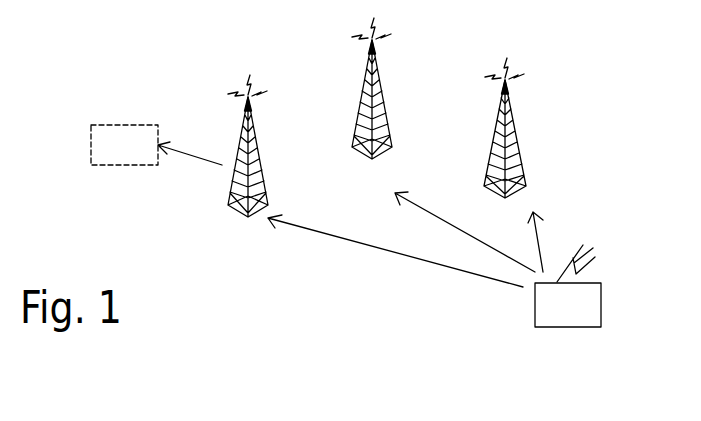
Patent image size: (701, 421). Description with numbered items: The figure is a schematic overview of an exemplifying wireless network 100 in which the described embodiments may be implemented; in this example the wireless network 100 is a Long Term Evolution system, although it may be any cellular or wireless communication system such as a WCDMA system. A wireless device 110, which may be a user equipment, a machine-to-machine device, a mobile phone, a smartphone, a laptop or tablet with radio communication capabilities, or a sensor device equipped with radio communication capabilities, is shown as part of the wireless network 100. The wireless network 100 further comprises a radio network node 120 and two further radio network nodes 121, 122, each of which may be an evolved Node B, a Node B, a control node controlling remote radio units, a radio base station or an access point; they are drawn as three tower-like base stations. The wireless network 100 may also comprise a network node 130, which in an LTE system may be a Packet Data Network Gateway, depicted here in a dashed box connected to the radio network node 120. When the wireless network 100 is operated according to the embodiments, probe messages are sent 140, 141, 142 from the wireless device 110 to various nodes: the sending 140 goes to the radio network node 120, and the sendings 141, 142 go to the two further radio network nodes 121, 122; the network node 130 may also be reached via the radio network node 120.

The wireless network 100 is at (183, 69).
The wireless device 110 is at (568, 286).
The radio network node 120 is at (226, 153).
The further radio network node 121 is at (352, 88).
The further radio network node 122 is at (536, 128).
The network node 130 is at (156, 145).
The sending of probe message 140 is at (301, 227).
The sending of probe message 141 is at (421, 207).
The sending of probe message 142 is at (538, 247).